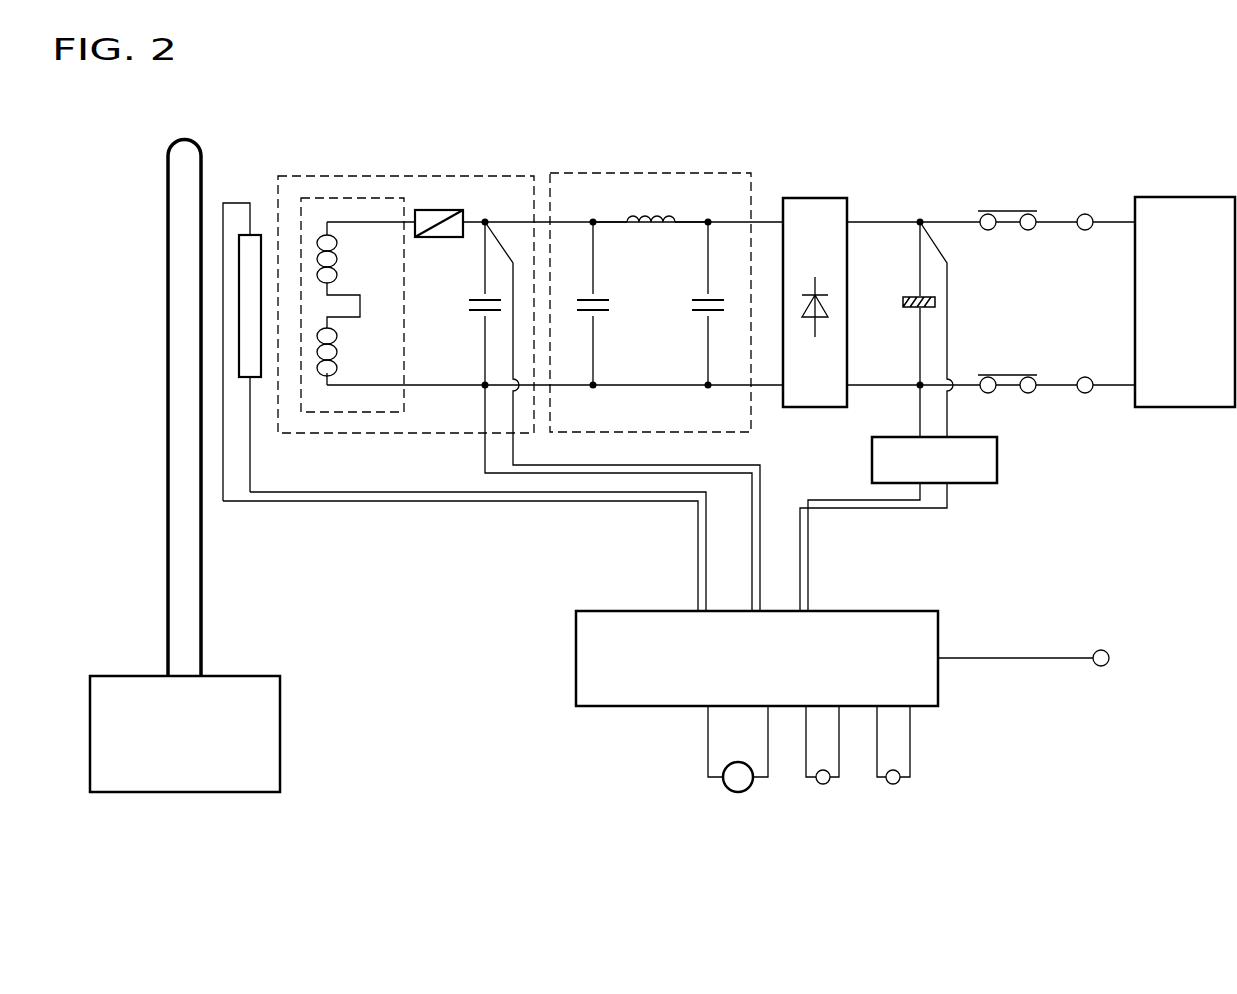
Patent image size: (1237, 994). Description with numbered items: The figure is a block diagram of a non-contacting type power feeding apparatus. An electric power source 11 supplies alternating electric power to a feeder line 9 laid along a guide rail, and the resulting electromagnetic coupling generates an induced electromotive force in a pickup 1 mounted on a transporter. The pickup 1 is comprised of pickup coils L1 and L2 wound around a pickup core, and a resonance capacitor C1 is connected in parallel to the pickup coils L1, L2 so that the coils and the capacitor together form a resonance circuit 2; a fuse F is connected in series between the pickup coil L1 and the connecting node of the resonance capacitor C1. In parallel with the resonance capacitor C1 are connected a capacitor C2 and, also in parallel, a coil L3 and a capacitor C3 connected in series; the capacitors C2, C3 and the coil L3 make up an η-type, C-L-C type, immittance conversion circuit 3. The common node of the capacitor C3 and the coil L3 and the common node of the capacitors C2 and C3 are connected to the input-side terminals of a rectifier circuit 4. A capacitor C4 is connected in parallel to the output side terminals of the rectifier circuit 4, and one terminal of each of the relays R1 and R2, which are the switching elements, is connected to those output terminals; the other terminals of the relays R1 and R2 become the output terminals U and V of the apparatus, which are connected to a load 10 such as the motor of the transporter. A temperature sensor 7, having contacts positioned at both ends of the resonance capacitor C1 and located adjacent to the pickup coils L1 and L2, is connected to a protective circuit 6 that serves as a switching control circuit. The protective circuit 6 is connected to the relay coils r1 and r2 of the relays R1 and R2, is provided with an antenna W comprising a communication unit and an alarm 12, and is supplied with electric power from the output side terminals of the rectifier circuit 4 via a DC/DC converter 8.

The pickup 1 is at (337, 198).
The resonance circuit 2 is at (413, 176).
The immittance conversion circuit 3 is at (598, 173).
The rectifier circuit 4 is at (808, 198).
The protective circuit 6 is at (604, 706).
The temperature sensor 7 is at (259, 235).
The DC/DC converter 8 is at (872, 460).
The feeder line 9 is at (167, 288).
The load 10 is at (1186, 197).
The electric power source 11 is at (280, 703).
The alarm 12 is at (738, 793).
The pickup coil L1 is at (340, 264).
The pickup coil L2 is at (340, 356).
The coil L3 is at (655, 232).
The fuse F is at (436, 237).
The resonance capacitor C1 is at (469, 303).
The capacitor C2 is at (609, 306).
The capacitor C3 is at (692, 302).
The capacitor C4 is at (903, 302).
The relay R1 is at (1006, 211).
The relay R2 is at (1006, 375).
The relay coil r1 is at (824, 785).
The relay coil r2 is at (895, 785).
The output terminal U is at (1085, 203).
The output terminal V is at (1084, 366).
The antenna W is at (1043, 658).